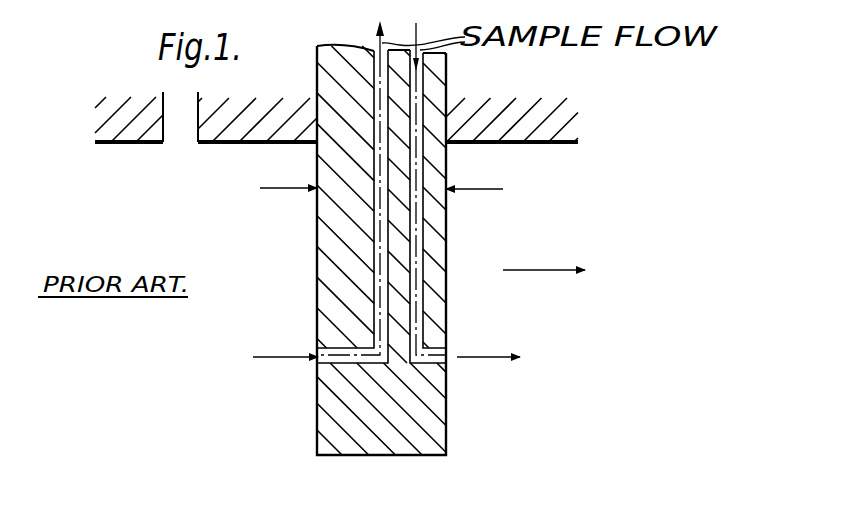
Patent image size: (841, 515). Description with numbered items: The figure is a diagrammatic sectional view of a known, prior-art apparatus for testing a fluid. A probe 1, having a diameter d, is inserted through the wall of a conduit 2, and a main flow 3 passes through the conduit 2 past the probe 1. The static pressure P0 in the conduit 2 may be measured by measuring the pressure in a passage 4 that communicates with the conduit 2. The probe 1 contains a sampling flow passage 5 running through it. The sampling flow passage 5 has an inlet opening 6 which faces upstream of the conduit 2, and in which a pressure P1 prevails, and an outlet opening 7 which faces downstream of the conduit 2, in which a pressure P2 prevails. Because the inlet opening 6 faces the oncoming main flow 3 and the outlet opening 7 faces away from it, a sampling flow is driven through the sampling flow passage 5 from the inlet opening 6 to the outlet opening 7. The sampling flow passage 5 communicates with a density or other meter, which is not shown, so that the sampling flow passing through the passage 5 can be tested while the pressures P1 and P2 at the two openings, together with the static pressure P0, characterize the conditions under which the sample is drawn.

The probe 1 is at (340, 257).
The conduit 2 is at (537, 143).
The main flow 3 is at (545, 268).
The passage 4 is at (190, 111).
The sampling flow passage 5 is at (418, 240).
The inlet opening 6 is at (328, 358).
The outlet opening 7 is at (446, 362).
The diameter d is at (345, 207).
The static pressure P0 is at (181, 126).
The pressure at inlet opening P1 is at (258, 375).
The pressure at outlet opening P2 is at (511, 373).